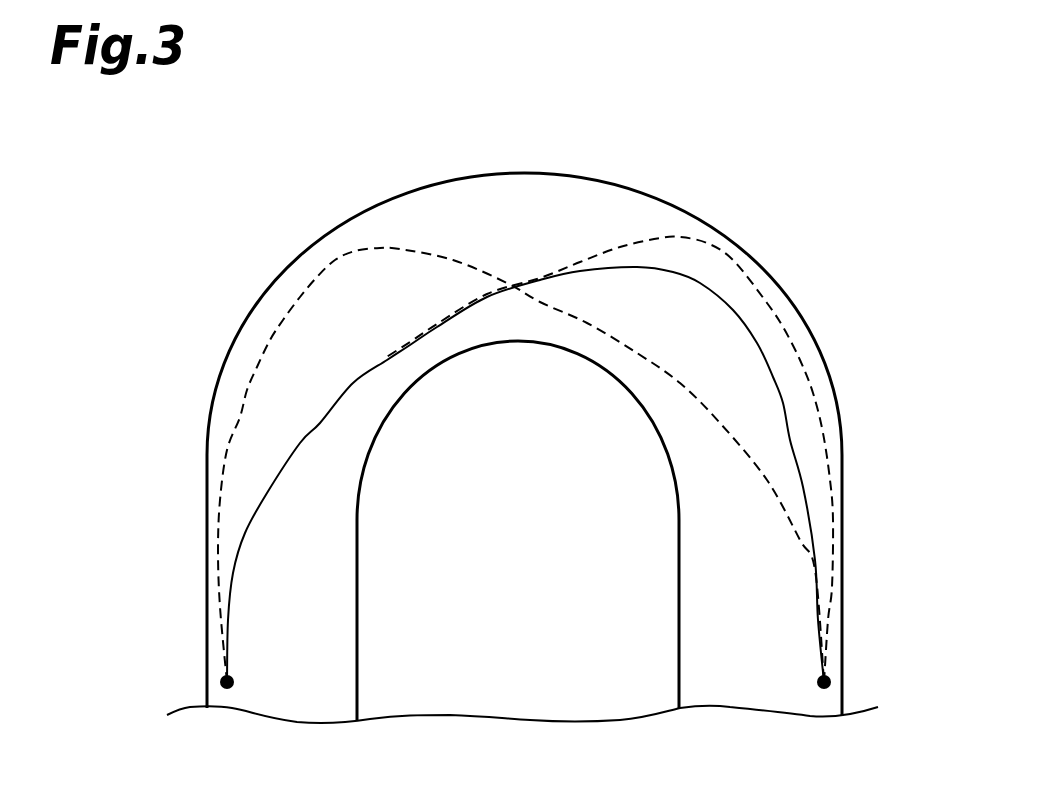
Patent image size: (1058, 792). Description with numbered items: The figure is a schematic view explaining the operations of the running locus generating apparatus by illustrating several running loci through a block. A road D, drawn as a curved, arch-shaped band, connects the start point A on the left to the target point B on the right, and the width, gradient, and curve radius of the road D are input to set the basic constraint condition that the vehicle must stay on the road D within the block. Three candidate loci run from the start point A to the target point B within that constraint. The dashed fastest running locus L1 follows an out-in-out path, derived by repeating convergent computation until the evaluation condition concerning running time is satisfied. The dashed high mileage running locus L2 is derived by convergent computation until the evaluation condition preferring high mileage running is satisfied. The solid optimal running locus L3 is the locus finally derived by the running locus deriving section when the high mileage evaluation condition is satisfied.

The road D is at (229, 353).
The fastest running locus L1 is at (294, 306).
The high mileage running locus L2 is at (782, 328).
The optimal running locus L3 is at (673, 268).
The start point A is at (220, 681).
The target point B is at (832, 681).